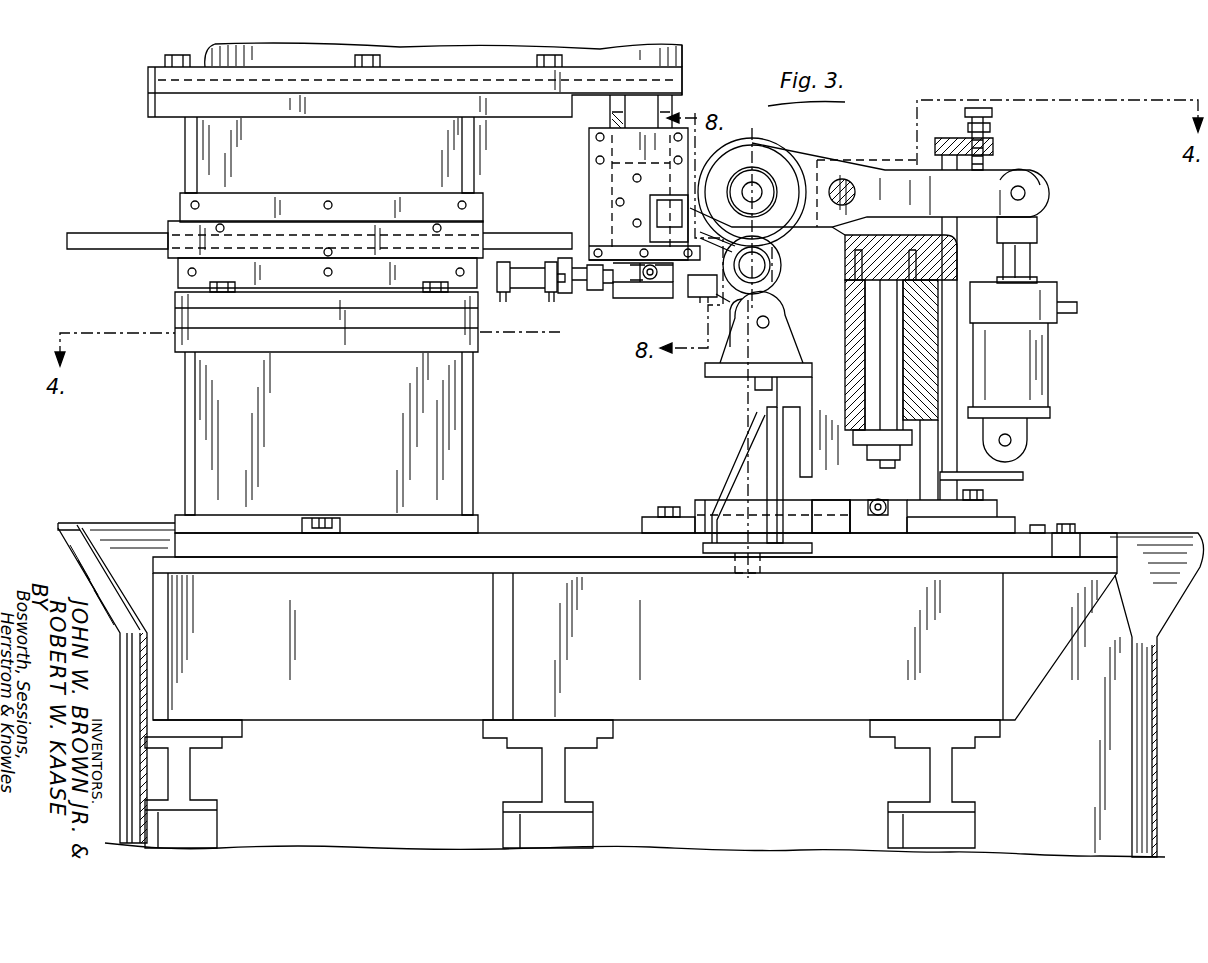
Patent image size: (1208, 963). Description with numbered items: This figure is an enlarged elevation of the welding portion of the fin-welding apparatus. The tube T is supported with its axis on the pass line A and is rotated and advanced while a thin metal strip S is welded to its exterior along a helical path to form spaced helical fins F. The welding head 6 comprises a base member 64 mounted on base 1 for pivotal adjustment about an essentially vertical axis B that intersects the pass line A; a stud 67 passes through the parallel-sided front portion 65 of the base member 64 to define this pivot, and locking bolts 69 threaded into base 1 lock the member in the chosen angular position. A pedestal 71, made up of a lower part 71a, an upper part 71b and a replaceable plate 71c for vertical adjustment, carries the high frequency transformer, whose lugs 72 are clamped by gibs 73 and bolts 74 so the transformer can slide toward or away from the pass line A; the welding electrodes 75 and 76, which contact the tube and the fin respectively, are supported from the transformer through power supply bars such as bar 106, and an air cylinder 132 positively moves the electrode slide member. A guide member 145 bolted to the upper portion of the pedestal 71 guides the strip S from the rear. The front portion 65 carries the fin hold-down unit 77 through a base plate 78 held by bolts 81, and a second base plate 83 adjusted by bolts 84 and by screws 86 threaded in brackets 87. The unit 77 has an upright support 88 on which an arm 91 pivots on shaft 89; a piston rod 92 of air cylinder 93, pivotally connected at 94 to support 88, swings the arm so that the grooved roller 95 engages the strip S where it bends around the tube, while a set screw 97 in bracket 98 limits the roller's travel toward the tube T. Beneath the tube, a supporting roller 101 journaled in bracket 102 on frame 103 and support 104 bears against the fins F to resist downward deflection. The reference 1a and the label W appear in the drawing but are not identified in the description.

The base 1 is at (755, 727).
The stand 1a is at (95, 545).
The welding head 6 is at (140, 103).
The base member 64 is at (522, 535).
The front portion 65 is at (270, 545).
The stud 67 is at (717, 580).
The locking bolts 69 is at (320, 520).
The pedestal 71 is at (478, 445).
The lower part 71a is at (207, 441).
The upper part 71b is at (205, 167).
The replaceable plate 71c is at (177, 310).
The lugs 72 is at (683, 88).
The gibs 73 is at (500, 88).
The bolts 74 is at (172, 58).
The welding electrode 75 is at (682, 298).
The welding electrode 76 is at (634, 293).
The fin hold-down unit 77 is at (1052, 240).
The base plate 78 is at (973, 527).
The bolts 81 is at (655, 497).
The base plate 83 is at (708, 501).
The bolts 84 is at (988, 495).
The screws 86 is at (878, 518).
The brackets 87 is at (847, 525).
The upright support 88 is at (1023, 478).
The shaft 89 is at (847, 183).
The arm 91 is at (1000, 178).
The piston rod 92 is at (1032, 263).
The air cylinder 93 is at (1050, 358).
The pivotal connection 94 is at (1012, 441).
The grooved roller 95 is at (751, 146).
The set screw 97 is at (985, 108).
The bracket 98 is at (995, 145).
The supporting roller 101 is at (770, 310).
The bracket 102 is at (785, 328).
The frame 103 is at (710, 372).
The support 104 is at (748, 480).
The power supply bar 106 is at (612, 109).
The air cylinder 132 is at (530, 292).
The guide member 145 is at (388, 221).
The strip S is at (113, 238).
The wheel W is at (785, 221).
The helical fins F is at (765, 231).
The pass line A is at (773, 268).
The tube T is at (770, 288).
The axis B is at (747, 407).